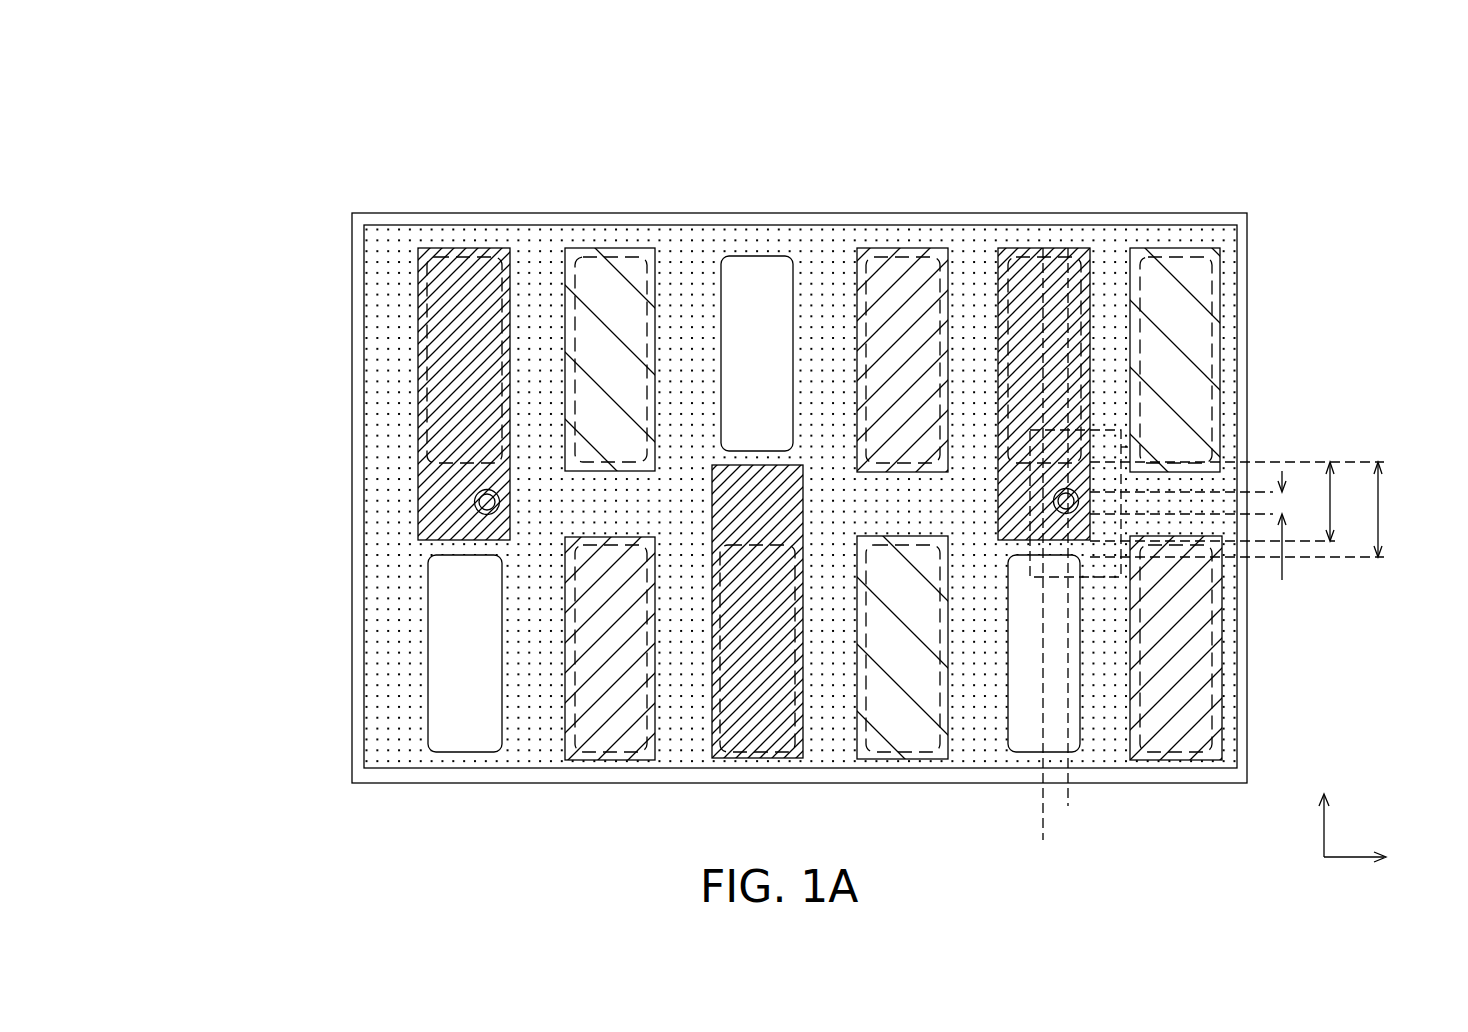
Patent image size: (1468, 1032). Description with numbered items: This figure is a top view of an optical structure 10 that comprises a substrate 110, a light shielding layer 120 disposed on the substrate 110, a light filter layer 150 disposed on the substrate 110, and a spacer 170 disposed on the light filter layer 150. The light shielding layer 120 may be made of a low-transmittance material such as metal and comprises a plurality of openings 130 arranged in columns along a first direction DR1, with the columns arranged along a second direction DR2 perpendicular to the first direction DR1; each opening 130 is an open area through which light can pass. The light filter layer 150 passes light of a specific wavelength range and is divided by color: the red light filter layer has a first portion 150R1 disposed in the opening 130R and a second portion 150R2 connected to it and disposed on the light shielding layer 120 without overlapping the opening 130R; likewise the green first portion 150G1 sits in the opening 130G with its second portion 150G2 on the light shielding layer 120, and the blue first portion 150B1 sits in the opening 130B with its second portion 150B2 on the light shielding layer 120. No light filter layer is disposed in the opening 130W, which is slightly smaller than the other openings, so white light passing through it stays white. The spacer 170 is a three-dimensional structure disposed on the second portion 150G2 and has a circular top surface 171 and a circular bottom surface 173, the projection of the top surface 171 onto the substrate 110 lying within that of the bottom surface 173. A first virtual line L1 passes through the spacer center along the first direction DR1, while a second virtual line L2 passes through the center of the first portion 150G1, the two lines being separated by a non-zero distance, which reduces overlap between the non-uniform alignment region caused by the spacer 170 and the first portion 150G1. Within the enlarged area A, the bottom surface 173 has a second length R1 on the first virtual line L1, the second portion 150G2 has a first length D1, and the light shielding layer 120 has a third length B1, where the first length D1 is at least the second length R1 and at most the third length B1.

The optical structure 10 is at (312, 66).
The substrate 110 is at (1249, 247).
The light shielding layer 120 is at (395, 692).
The openings 130 is at (156, 105).
The opening 130R is at (915, 830).
The opening 130G is at (1034, 247).
The opening 130B is at (1207, 827).
The opening 130W is at (1137, 823).
The light filter layer 150 is at (240, 222).
The first portion 150R1 is at (1227, 205).
The second portion 150R2 is at (1205, 150).
The first portion 150G1 is at (1093, 200).
The second portion 150G2 is at (1010, 465).
The first portion 150B1 is at (1292, 667).
The second portion 150B2 is at (1292, 640).
The spacer 170 is at (583, 493).
The top surface 171 is at (156, 452).
The bottom surface 173 is at (1057, 494).
The area A is at (1147, 448).
The first length D1 is at (1237, 501).
The third length B1 is at (1253, 509).
The second length R1 is at (1204, 528).
The first virtual line L1 is at (1067, 543).
The second virtual line L2 is at (1042, 560).
The first direction DR1 is at (1325, 812).
The second direction DR2 is at (1383, 858).